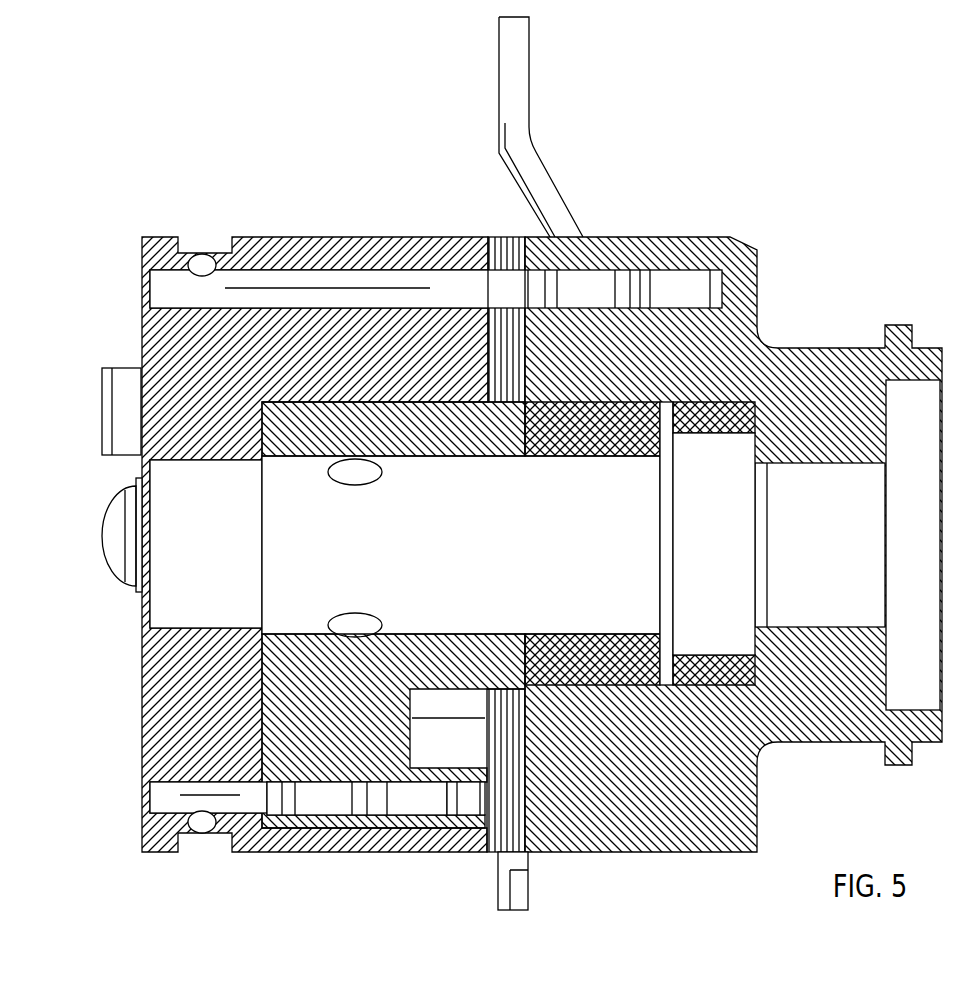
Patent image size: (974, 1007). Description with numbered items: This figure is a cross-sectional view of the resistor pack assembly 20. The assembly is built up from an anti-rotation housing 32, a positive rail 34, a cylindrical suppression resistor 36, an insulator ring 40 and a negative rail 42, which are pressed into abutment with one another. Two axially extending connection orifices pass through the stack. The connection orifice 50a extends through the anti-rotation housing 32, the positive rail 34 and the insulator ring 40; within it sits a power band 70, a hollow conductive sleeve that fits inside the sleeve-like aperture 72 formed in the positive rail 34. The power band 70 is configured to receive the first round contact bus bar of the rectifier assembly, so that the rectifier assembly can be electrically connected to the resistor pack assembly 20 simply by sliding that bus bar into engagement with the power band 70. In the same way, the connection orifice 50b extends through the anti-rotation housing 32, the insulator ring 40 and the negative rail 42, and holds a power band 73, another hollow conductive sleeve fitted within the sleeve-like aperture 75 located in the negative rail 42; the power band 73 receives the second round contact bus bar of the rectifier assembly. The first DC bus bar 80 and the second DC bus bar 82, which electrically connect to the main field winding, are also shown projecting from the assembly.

The resistor pack assembly 20 is at (486, 475).
The anti-rotation housing 32 is at (322, 246).
The positive rail 34 is at (390, 420).
The cylindrical suppression resistor 36 is at (598, 420).
The insulator ring 40 is at (510, 740).
The negative rail 42 is at (705, 827).
The connection orifice 50a is at (150, 822).
The connection orifice 50b is at (157, 291).
The power band 70 is at (329, 805).
The sleeve-like aperture 72 is at (469, 805).
The power band 73 is at (667, 285).
The sleeve-like aperture 75 is at (538, 283).
The first DC bus bar 80 is at (507, 885).
The second DC bus bar 82 is at (518, 68).